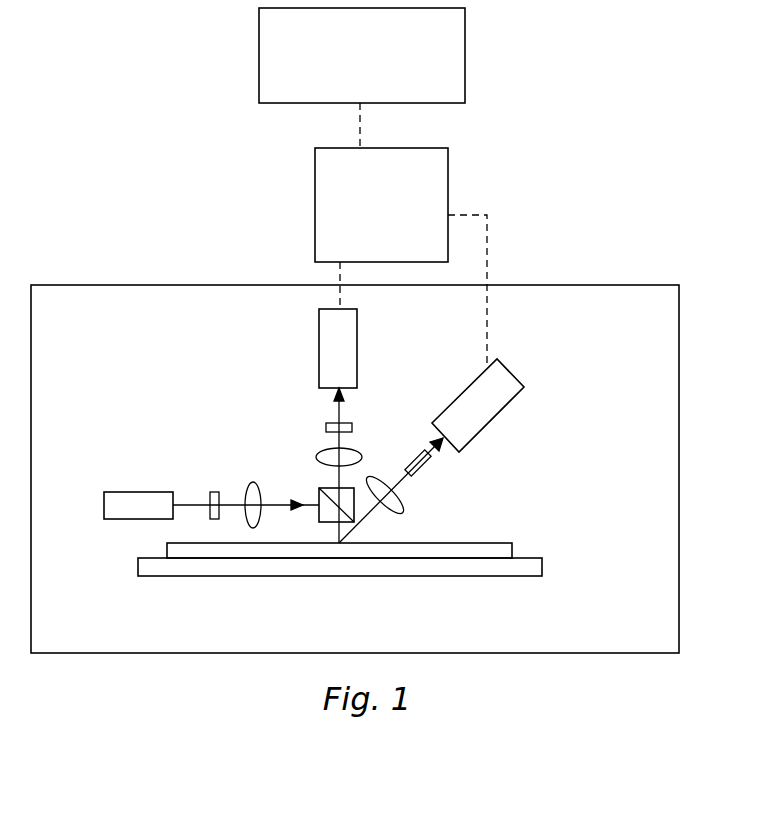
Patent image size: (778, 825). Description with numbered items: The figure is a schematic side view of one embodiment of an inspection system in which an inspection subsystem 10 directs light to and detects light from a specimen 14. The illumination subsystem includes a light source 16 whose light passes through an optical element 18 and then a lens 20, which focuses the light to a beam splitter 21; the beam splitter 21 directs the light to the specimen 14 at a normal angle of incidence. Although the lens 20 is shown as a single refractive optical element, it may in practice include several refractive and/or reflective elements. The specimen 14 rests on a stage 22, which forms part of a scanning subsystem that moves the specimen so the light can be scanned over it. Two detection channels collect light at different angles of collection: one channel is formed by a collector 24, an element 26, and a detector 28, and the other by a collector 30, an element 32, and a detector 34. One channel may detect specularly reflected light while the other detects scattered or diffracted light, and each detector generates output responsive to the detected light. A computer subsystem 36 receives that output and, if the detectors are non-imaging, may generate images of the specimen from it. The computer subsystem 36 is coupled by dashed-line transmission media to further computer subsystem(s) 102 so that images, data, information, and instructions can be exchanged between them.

The inspection subsystem 10 is at (679, 303).
The specimen 14 is at (167, 549).
The light source 16 is at (108, 492).
The optical element 18 is at (215, 490).
The lens 20 is at (253, 482).
The beam splitter 21 is at (331, 488).
The stage 22 is at (138, 571).
The collector 24 is at (323, 450).
The element 26 is at (325, 425).
The detector 28 is at (319, 352).
The collector 30 is at (402, 512).
The element 32 is at (425, 473).
The detector 34 is at (508, 408).
The computer subsystem 36 is at (381, 205).
The computer subsystem(s) 102 is at (362, 55).